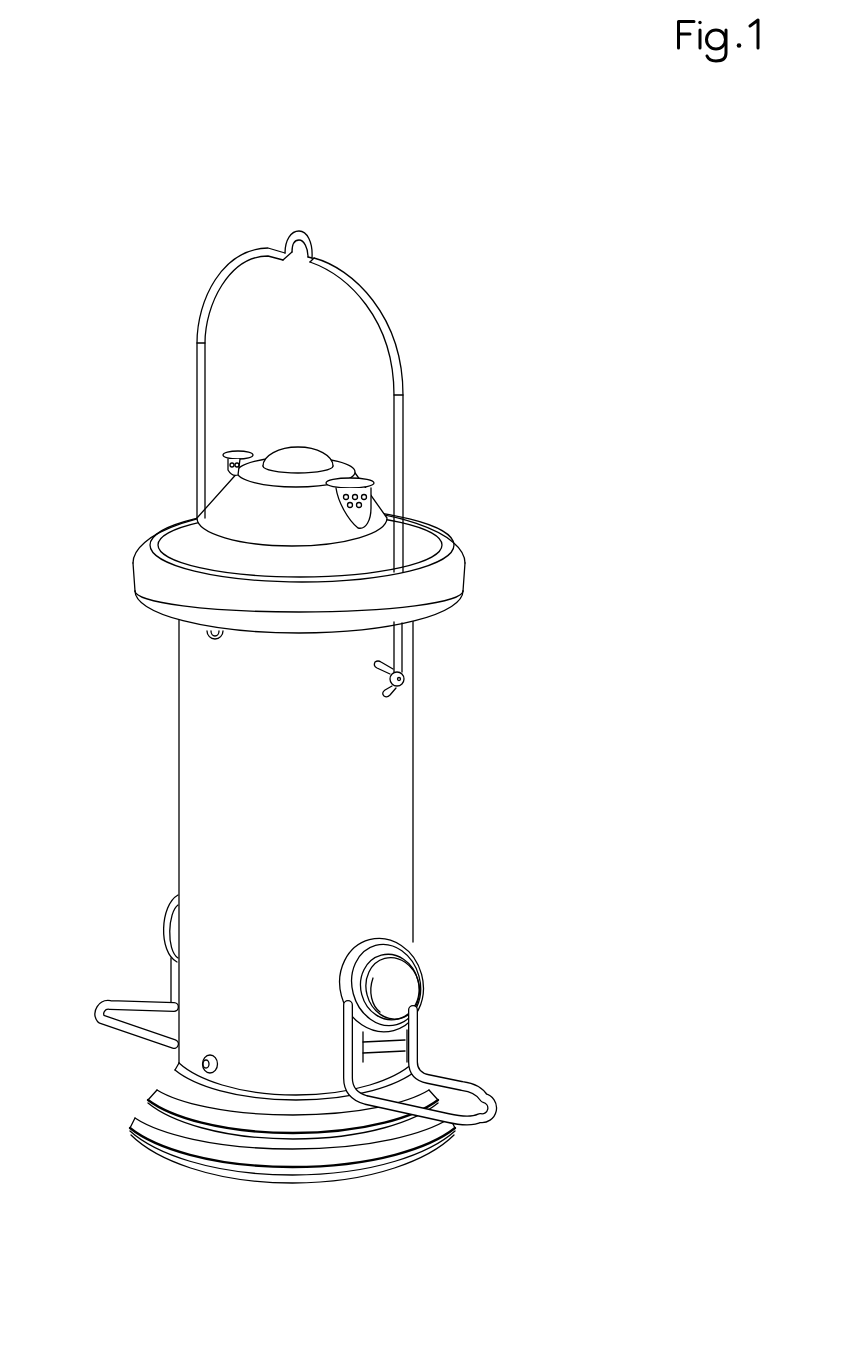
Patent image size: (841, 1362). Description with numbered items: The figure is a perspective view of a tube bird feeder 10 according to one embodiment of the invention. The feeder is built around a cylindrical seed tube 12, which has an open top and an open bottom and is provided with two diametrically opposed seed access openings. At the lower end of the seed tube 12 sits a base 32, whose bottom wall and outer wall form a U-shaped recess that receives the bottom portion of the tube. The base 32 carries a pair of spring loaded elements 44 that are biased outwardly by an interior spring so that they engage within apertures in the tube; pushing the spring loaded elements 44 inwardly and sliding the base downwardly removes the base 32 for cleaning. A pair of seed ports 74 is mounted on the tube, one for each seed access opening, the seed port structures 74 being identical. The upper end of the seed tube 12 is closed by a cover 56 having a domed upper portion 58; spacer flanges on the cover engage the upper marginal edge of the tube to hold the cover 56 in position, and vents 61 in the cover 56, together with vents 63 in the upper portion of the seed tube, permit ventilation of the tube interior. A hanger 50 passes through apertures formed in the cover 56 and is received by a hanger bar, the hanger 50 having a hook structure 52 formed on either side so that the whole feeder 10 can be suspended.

The tube bird feeder 10 is at (467, 342).
The cylindrical seed tube 12 is at (413, 847).
The base 32 is at (122, 1117).
The spring loaded elements 44 is at (203, 1062).
The hanger 50 is at (403, 448).
The hook structure 52 is at (396, 693).
The cover 56 is at (135, 523).
The domed upper portion 58 is at (260, 475).
The vents 61 is at (372, 503).
The vents 63 is at (207, 632).
The seed ports 74 is at (448, 1055).